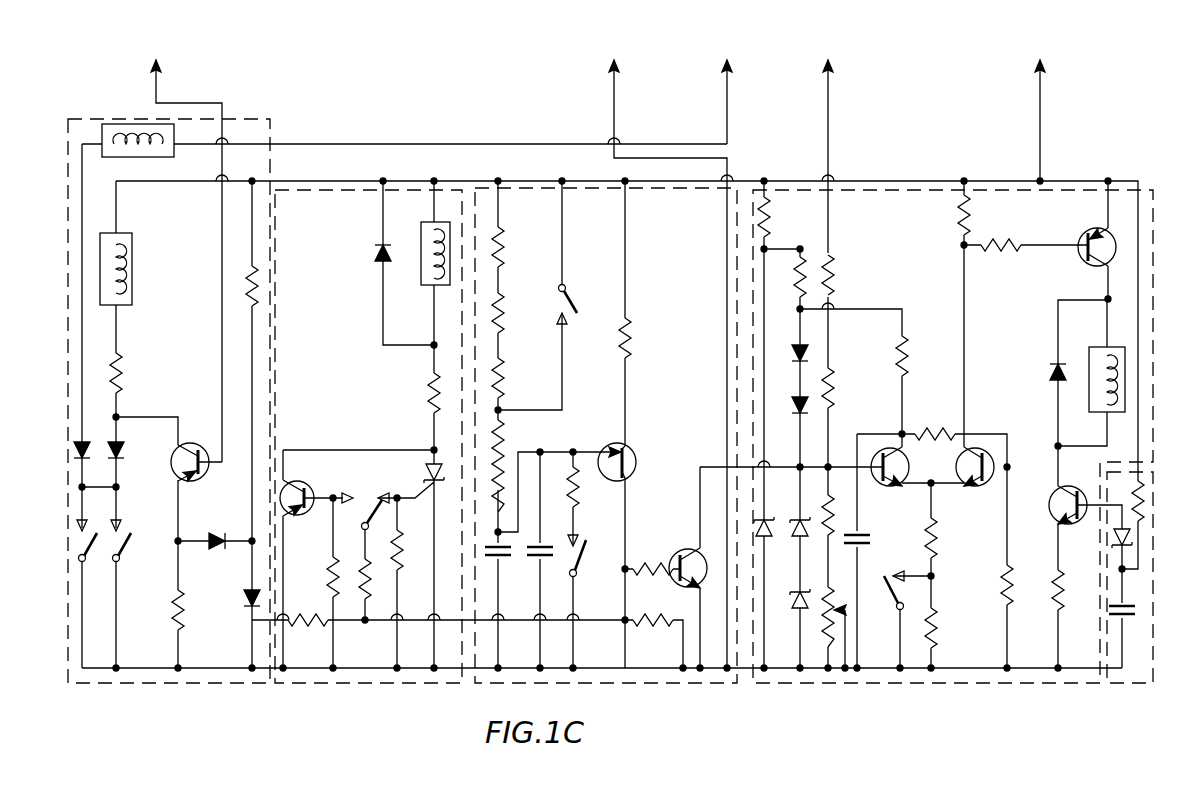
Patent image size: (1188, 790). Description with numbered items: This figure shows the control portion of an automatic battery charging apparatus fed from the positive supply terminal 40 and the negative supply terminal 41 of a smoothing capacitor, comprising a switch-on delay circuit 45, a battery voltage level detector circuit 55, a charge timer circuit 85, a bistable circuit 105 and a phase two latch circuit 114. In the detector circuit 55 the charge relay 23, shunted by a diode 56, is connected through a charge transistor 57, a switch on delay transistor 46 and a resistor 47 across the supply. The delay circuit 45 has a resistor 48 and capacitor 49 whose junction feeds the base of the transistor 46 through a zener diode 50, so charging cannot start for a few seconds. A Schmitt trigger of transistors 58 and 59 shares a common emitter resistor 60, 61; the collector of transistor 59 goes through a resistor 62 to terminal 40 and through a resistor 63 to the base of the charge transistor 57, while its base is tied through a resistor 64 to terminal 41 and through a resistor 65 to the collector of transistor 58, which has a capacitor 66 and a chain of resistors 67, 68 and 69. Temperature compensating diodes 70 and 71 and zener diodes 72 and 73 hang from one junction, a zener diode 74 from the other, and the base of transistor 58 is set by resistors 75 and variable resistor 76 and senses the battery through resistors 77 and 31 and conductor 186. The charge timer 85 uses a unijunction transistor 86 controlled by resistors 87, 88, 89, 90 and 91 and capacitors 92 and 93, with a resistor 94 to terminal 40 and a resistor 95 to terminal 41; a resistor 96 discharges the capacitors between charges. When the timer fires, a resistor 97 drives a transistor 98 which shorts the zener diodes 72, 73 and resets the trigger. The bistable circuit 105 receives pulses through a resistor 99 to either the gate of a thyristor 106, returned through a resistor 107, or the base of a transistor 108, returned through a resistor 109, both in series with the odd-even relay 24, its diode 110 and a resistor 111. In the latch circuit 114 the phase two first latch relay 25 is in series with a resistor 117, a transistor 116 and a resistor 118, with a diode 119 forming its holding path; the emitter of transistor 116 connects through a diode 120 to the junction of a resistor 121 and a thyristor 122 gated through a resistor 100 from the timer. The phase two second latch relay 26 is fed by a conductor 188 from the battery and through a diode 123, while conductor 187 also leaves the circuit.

The terminal line 187 is at (153, 68).
The phase two second latch relay 26 is at (114, 128).
The phase two first latch relay 25 is at (122, 252).
The resistor 121 is at (250, 278).
The resistor 117 is at (120, 366).
The diode 123 is at (96, 445).
The diode 119 is at (122, 462).
The transistor 116 is at (192, 484).
The resistor 118 is at (172, 622).
The diode 120 is at (217, 548).
The thyristor 122 is at (249, 601).
The phase two latch circuit 114 is at (195, 688).
The bistable circuit 105 is at (340, 690).
The diode 110 is at (377, 257).
The odd-even relay 24 is at (422, 240).
The resistor 111 is at (430, 395).
The thyristor 106 is at (428, 462).
The transistor 108 is at (306, 491).
The resistor 109 is at (331, 562).
The resistor 91 is at (485, 503).
The resistor 100 is at (310, 628).
The resistor 99 is at (364, 610).
The resistor 107 is at (402, 570).
The resistor 87 is at (505, 233).
The resistor 88 is at (505, 301).
The resistor 89 is at (505, 379).
The resistor 94 is at (632, 343).
The resistor 90 is at (505, 443).
The capacitor 92 is at (505, 563).
The capacitor 93 is at (545, 563).
The resistor 96 is at (580, 492).
The unijunction transistor 86 is at (634, 451).
The resistor 97 is at (650, 562).
The transistor 98 is at (681, 586).
The resistor 95 is at (650, 626).
The charge timer circuit 85 is at (633, 686).
The negative supply terminal 41 is at (611, 66).
The conductor 188 is at (725, 67).
The conductor 186 is at (826, 67).
The positive supply terminal 40 is at (1038, 67).
The resistor 69 is at (772, 217).
The resistor 68 is at (806, 262).
The resistor 31 is at (838, 271).
The temperature compensating diode 70 is at (798, 349).
The temperature compensating diode 71 is at (798, 402).
The resistor 77 is at (836, 389).
The resistor 67 is at (908, 356).
The transistor 58 is at (876, 455).
The resistor 65 is at (935, 430).
The transistor 59 is at (983, 455).
The zener diode 72 is at (795, 515).
The zener diode 74 is at (772, 537).
The zener diode 73 is at (795, 612).
The resistor 75 is at (838, 511).
The capacitor 66 is at (870, 537).
The variable resistor 76 is at (840, 606).
The common emitter resistor 60 is at (940, 531).
The common emitter resistor 61 is at (940, 626).
The resistor 64 is at (1005, 578).
The resistor 62 is at (958, 216).
The resistor 63 is at (998, 256).
The charge transistor 57 is at (1082, 240).
The diode 56 is at (1050, 370).
The charge relay 23 is at (1088, 362).
The switch on delay transistor 46 is at (1055, 508).
The resistor 48 is at (1128, 500).
The zener diode 50 is at (1115, 546).
The capacitor 49 is at (1112, 612).
The resistor 47 is at (1068, 608).
The battery voltage level detector circuit 55 is at (895, 686).
The switch-on delay circuit 45 is at (1118, 689).